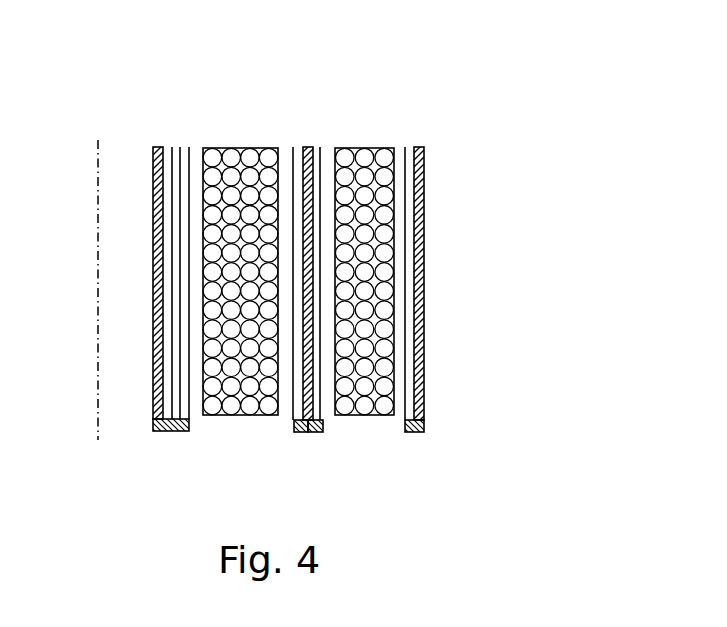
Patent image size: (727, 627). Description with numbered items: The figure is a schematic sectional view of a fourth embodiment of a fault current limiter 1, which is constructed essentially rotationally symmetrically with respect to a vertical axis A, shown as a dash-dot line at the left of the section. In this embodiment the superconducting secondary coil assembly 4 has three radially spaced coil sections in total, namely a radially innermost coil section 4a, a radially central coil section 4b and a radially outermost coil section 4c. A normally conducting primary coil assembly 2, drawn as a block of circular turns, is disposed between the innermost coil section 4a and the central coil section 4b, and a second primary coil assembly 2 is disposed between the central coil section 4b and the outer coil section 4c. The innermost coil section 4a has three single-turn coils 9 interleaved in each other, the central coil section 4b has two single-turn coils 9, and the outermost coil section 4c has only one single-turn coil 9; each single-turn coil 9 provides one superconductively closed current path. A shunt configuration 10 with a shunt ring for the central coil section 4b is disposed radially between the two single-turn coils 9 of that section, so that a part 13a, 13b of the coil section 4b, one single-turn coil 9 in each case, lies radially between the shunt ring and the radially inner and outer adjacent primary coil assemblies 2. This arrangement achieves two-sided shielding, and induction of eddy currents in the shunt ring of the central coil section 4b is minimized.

The fault current limiter 1 is at (516, 122).
The primary coil assembly 2 is at (228, 395).
The secondary coil assembly 4 is at (179, 378).
The radially innermost coil section 4a is at (153, 268).
The radially central coil section 4b is at (391, 254).
The radially outermost coil section 4c is at (412, 131).
The single-turn coil 9 is at (191, 146).
The shunt configuration 10 is at (307, 238).
The part of the coil section 13a is at (284, 423).
The part of the coil section 13b is at (332, 424).
The vertical axis A is at (98, 238).